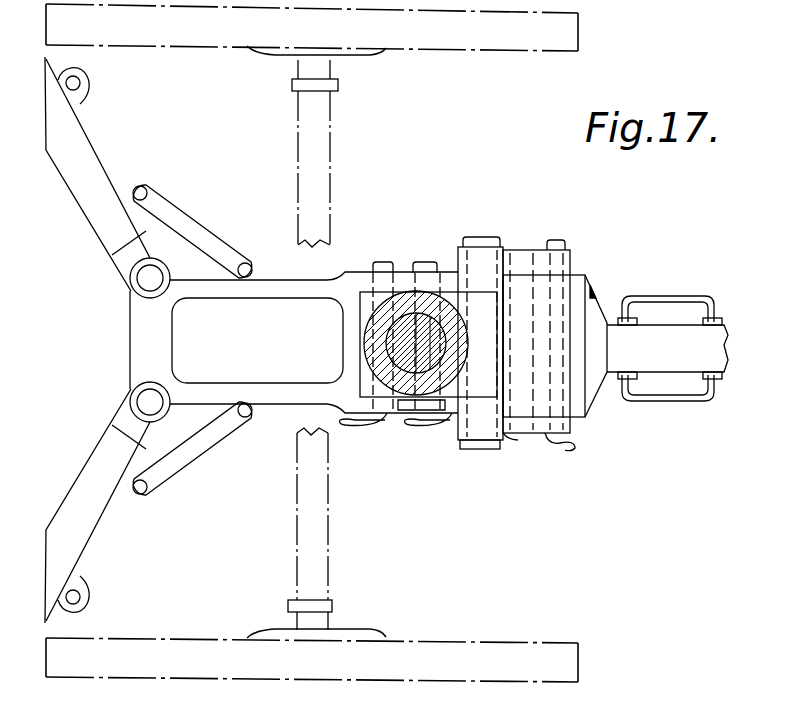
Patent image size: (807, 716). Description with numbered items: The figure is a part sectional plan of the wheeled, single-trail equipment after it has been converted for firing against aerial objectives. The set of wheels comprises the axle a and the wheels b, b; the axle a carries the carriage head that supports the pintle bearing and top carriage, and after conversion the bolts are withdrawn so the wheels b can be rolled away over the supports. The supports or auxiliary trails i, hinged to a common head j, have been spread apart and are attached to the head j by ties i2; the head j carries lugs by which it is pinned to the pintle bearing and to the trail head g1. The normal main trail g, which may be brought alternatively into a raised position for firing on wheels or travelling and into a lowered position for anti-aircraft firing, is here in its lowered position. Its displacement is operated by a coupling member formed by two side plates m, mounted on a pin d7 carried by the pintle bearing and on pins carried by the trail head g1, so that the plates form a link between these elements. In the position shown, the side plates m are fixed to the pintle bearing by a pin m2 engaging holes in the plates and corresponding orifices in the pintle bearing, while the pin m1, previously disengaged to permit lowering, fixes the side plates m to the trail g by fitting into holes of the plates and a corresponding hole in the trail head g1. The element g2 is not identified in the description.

The axle a is at (327, 148).
The wheels b is at (472, 43).
The supports or auxiliary trails i is at (103, 170).
The ties i2 is at (223, 460).
The head j is at (290, 290).
The side plates m is at (507, 255).
The pin m1 is at (562, 250).
The pin m2 is at (423, 260).
The pin d7 is at (487, 236).
The main trail g is at (657, 368).
The trail head g1 is at (597, 295).
The spring clip g2 is at (542, 440).